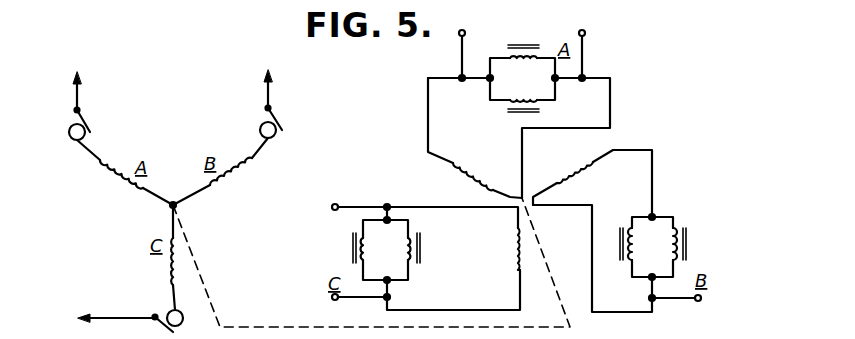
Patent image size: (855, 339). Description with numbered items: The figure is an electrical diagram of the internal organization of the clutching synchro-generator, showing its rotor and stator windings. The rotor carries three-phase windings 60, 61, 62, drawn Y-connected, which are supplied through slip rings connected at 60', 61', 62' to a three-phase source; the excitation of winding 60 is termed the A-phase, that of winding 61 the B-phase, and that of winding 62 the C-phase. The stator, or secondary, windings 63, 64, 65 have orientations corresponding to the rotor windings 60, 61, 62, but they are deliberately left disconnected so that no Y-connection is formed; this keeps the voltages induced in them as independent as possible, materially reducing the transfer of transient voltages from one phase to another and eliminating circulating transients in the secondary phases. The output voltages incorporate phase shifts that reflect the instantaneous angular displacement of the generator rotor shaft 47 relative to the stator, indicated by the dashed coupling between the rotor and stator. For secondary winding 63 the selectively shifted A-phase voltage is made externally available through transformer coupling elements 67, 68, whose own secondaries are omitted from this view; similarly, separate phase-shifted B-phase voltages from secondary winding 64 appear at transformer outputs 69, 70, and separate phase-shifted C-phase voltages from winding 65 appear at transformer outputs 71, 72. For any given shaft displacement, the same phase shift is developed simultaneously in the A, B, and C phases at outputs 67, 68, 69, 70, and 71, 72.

The generator rotor shaft 47 is at (208, 290).
The rotor winding 60 is at (121, 170).
The slip ring connection 60' is at (97, 102).
The rotor winding 61 is at (224, 166).
The slip ring connection 61' is at (288, 100).
The rotor winding 62 is at (160, 265).
The slip ring connection 62' is at (125, 309).
The stator secondary winding 63 is at (468, 169).
The stator secondary winding 64 is at (580, 169).
The stator secondary winding 65 is at (514, 252).
The transformer coupling element 67 is at (534, 98).
The transformer coupling element 68 is at (524, 62).
The transformer output 69 is at (638, 243).
The transformer output 70 is at (669, 250).
The transformer output 71 is at (404, 251).
The transformer output 72 is at (369, 245).